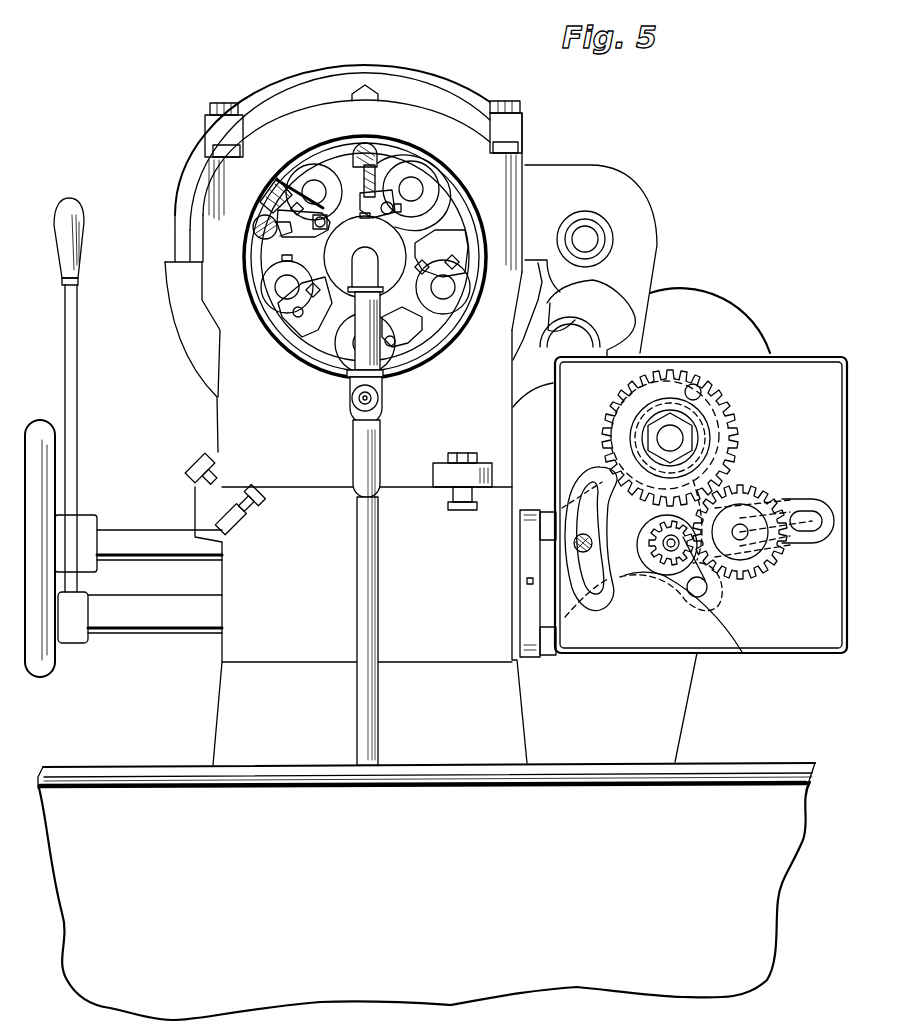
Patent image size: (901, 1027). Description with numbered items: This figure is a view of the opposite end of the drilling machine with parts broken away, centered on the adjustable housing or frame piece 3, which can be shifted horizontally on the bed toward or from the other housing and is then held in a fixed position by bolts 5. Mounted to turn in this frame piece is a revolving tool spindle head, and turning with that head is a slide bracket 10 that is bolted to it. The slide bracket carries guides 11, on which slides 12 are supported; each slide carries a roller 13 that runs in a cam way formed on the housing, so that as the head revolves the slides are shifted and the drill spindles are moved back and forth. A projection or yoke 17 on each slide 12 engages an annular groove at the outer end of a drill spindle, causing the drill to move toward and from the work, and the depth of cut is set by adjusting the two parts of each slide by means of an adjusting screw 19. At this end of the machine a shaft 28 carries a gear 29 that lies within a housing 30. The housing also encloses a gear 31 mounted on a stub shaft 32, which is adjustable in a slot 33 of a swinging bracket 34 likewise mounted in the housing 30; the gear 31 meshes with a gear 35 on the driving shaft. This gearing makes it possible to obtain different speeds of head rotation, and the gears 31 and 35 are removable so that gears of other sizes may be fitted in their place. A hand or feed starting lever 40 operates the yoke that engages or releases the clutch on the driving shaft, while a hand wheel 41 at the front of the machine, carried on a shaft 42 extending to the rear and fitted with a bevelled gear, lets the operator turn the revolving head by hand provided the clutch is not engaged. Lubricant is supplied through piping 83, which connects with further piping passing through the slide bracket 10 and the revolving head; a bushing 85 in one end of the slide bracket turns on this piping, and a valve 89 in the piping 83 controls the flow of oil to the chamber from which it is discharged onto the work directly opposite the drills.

The housing or frame piece 3 is at (245, 410).
The bolts 5 is at (455, 455).
The slide bracket 10 is at (247, 240).
The guides 11 is at (247, 222).
The slides 12 is at (303, 150).
The roller 13 is at (262, 195).
The projection or yoke 17 is at (417, 157).
The adjusting screw 19 is at (320, 203).
The shaft 28 is at (673, 437).
The gear 29 is at (717, 422).
The housing 30 is at (678, 352).
The gear 31 is at (707, 503).
The stub shaft 32 is at (740, 535).
The slot 33 is at (812, 527).
The swinging bracket 34 is at (625, 562).
The gear 35 is at (742, 640).
The hand or feed starting lever 40 is at (75, 362).
The hand wheel 41 is at (45, 483).
The shaft 42 is at (143, 537).
The piping 83 is at (377, 600).
The bushing 85 is at (468, 213).
The valve 89 is at (363, 398).